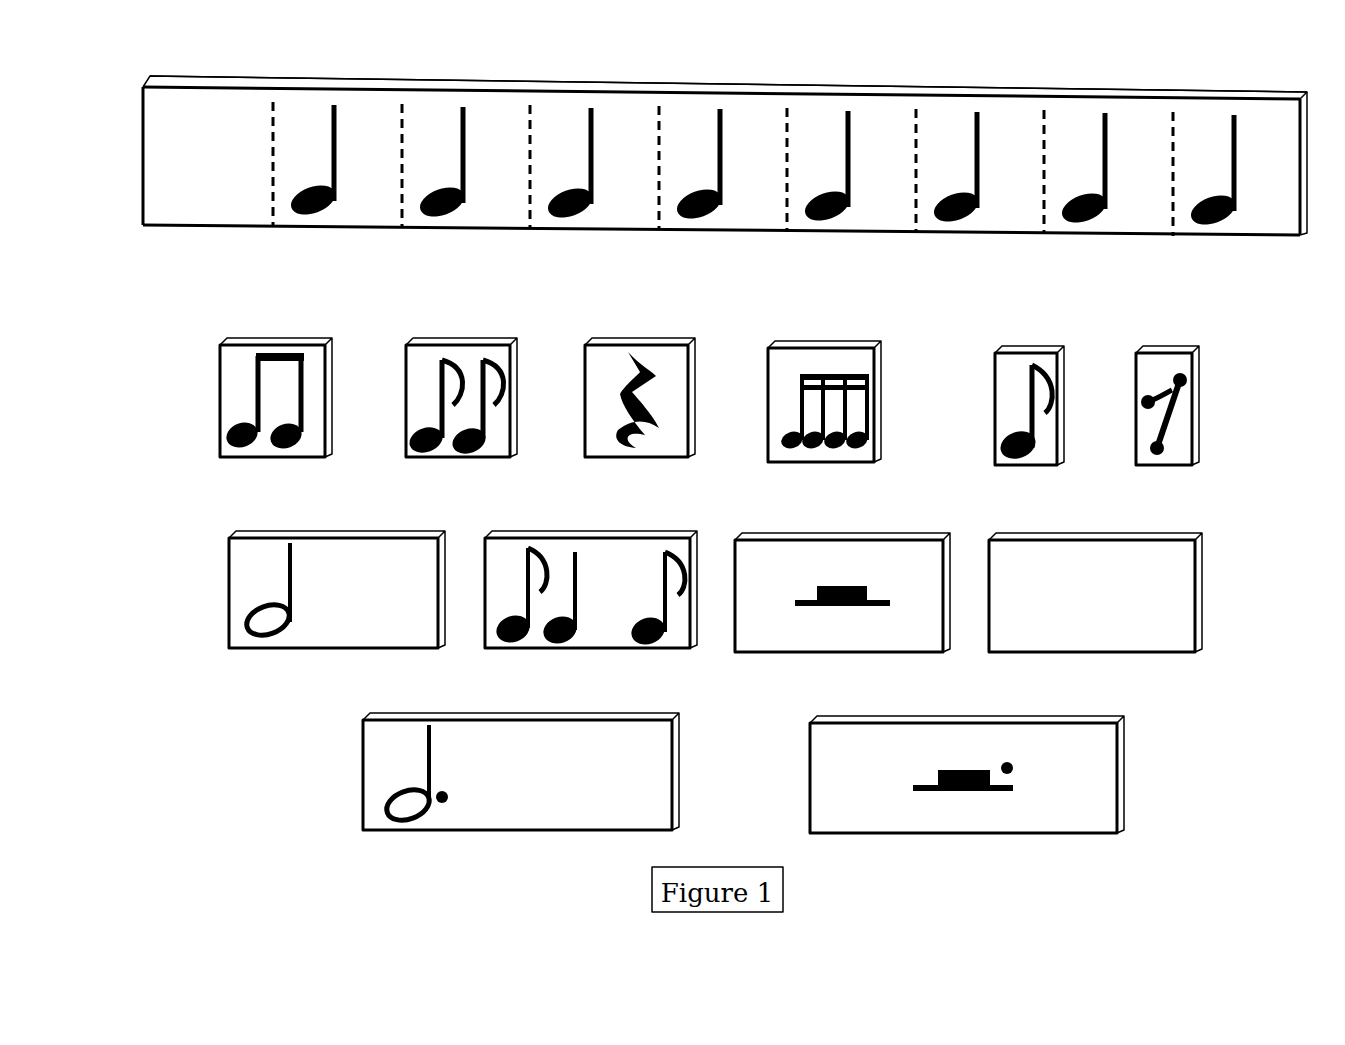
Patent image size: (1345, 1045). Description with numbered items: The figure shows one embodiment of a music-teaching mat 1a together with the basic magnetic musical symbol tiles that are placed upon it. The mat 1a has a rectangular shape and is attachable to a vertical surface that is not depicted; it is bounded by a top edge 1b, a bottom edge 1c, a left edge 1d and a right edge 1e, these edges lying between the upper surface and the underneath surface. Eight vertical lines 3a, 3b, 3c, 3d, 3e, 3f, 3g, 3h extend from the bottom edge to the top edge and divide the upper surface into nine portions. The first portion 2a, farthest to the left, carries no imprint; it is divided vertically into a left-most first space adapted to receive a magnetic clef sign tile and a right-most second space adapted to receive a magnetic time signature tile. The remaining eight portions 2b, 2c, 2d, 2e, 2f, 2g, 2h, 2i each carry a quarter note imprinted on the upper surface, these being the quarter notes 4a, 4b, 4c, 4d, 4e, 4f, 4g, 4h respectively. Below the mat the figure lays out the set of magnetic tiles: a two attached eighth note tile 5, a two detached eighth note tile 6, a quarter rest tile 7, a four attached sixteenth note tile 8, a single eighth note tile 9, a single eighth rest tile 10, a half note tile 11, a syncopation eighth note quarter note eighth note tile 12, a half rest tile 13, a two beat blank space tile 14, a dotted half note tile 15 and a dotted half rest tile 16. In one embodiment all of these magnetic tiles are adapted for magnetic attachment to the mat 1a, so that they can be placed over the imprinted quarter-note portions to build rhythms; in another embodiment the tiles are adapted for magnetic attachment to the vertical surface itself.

The mat 1a is at (173, 82).
The top edge 1b is at (195, 85).
The bottom edge 1c is at (771, 235).
The left edge 1d is at (141, 176).
The right edge 1e is at (1303, 167).
The first portion 2a is at (240, 127).
The second portion 2b is at (376, 123).
The third portion 2c is at (514, 130).
The fourth portion 2d is at (641, 130).
The fifth portion 2e is at (765, 127).
The sixth portion 2f is at (887, 128).
The seventh portion 2g is at (1016, 130).
The eighth portion 2h is at (1145, 125).
The ninth portion 2i is at (1275, 127).
The vertical line 3a is at (281, 81).
The vertical line 3b is at (410, 83).
The vertical line 3c is at (540, 84).
The vertical line 3d is at (668, 85).
The vertical line 3e is at (795, 87).
The vertical line 3f is at (923, 88).
The vertical line 3g is at (1050, 90).
The vertical line 3h is at (1180, 91).
The quarter note 4a is at (332, 206).
The quarter note 4b is at (461, 208).
The quarter note 4c is at (589, 209).
The quarter note 4d is at (718, 210).
The quarter note 4e is at (846, 212).
The quarter note 4f is at (975, 213).
The quarter note 4g is at (1103, 214).
The quarter note 4h is at (1232, 216).
The two attached eighth note tile 5 is at (240, 408).
The two detached eighth note tile 6 is at (425, 410).
The quarter rest tile 7 is at (600, 410).
The four attached sixteenth note tile 8 is at (790, 411).
The single eighth note tile 9 is at (1016, 413).
The single eighth rest tile 10 is at (1155, 418).
The half note tile 11 is at (330, 565).
The syncopation eighth note quarter note eighth note tile 12 is at (605, 565).
The half rest tile 13 is at (840, 565).
The 2 beat blank space tile 14 is at (1103, 578).
The dotted half note tile 15 is at (388, 768).
The dotted half rest tile 16 is at (835, 772).